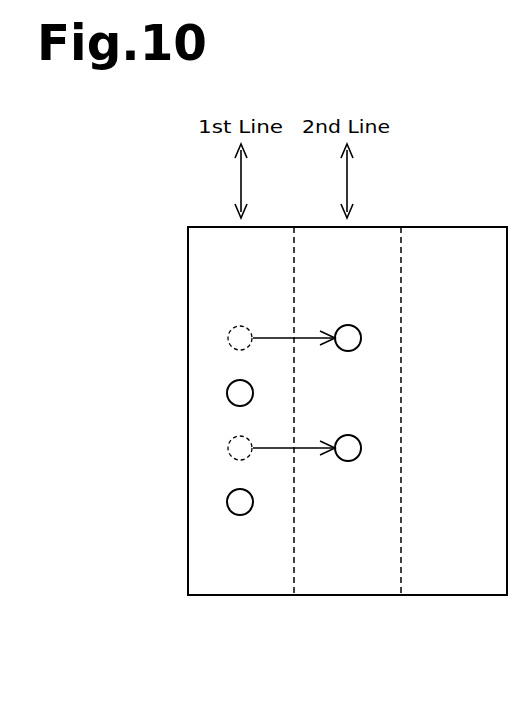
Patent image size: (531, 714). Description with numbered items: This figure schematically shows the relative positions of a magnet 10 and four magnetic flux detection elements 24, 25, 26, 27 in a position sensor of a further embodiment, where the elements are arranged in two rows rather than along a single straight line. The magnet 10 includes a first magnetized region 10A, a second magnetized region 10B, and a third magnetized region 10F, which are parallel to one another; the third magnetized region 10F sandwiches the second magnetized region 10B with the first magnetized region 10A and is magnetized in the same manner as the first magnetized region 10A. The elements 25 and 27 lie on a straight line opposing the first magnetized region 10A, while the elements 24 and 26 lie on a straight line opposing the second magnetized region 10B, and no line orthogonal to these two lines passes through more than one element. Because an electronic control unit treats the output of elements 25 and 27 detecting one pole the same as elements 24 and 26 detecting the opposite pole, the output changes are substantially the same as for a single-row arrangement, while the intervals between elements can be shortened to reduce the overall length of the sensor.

The magnet 10 is at (465, 188).
The first magnetized region 10A is at (240, 597).
The second magnetized region 10B is at (345, 597).
The third magnetized region 10F is at (455, 597).
The magnetic flux detection element 24 is at (362, 337).
The magnetic flux detection element 25 is at (254, 392).
The magnetic flux detection element 26 is at (362, 447).
The magnetic flux detection element 27 is at (254, 501).